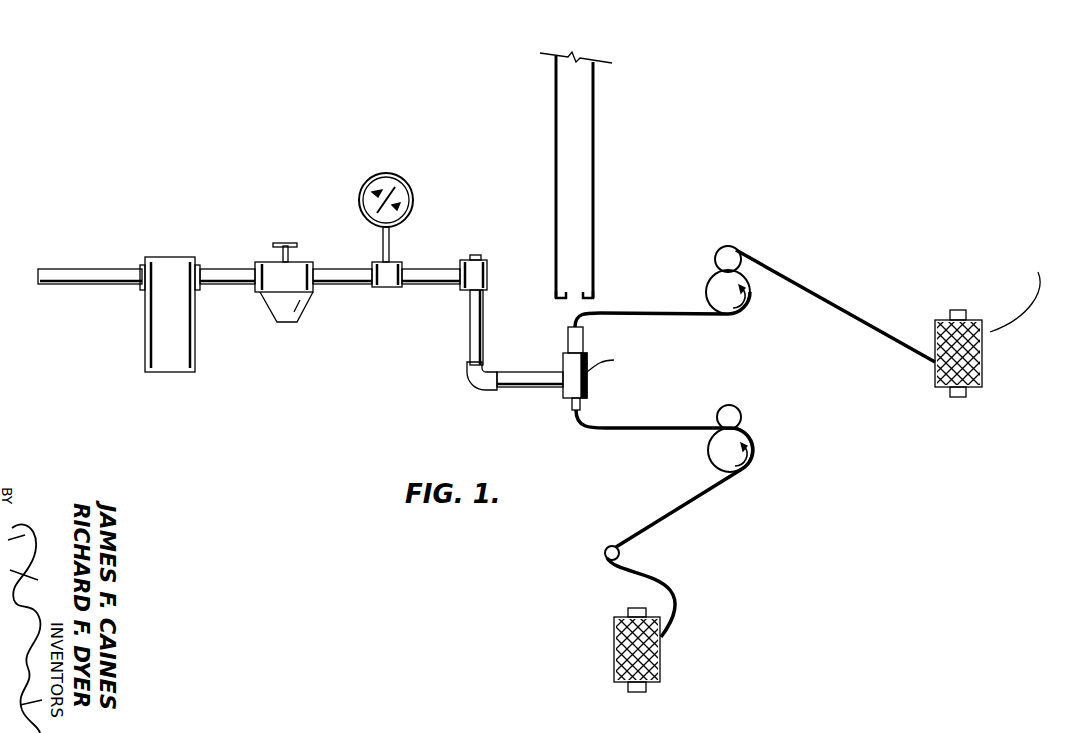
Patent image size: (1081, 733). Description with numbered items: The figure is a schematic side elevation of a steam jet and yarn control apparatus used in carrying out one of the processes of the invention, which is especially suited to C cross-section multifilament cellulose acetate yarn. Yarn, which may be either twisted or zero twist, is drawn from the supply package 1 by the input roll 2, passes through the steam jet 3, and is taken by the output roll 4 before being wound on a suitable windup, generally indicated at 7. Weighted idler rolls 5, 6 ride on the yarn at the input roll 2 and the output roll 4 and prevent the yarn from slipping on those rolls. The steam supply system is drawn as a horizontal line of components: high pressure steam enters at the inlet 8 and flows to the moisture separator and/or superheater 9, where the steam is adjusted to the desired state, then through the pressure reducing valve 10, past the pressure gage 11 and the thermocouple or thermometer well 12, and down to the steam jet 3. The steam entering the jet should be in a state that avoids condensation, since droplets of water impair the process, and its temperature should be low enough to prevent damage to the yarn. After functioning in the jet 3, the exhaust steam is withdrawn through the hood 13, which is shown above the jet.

The supply package 1 is at (614, 617).
The input roll 2 is at (715, 455).
The steam jet 3 is at (565, 400).
The output roll 4 is at (712, 287).
The weighted idler roll 5 is at (740, 408).
The weighted idler roll 6 is at (721, 247).
The windup 7 is at (970, 390).
The steam inlet 8 is at (88, 268).
The moisture separator and/or superheater 9 is at (176, 257).
The pressure reducing valve 10 is at (270, 262).
The pressure gage 11 is at (372, 178).
The thermocouple or thermometer well 12 is at (472, 255).
The hood 13 is at (582, 130).